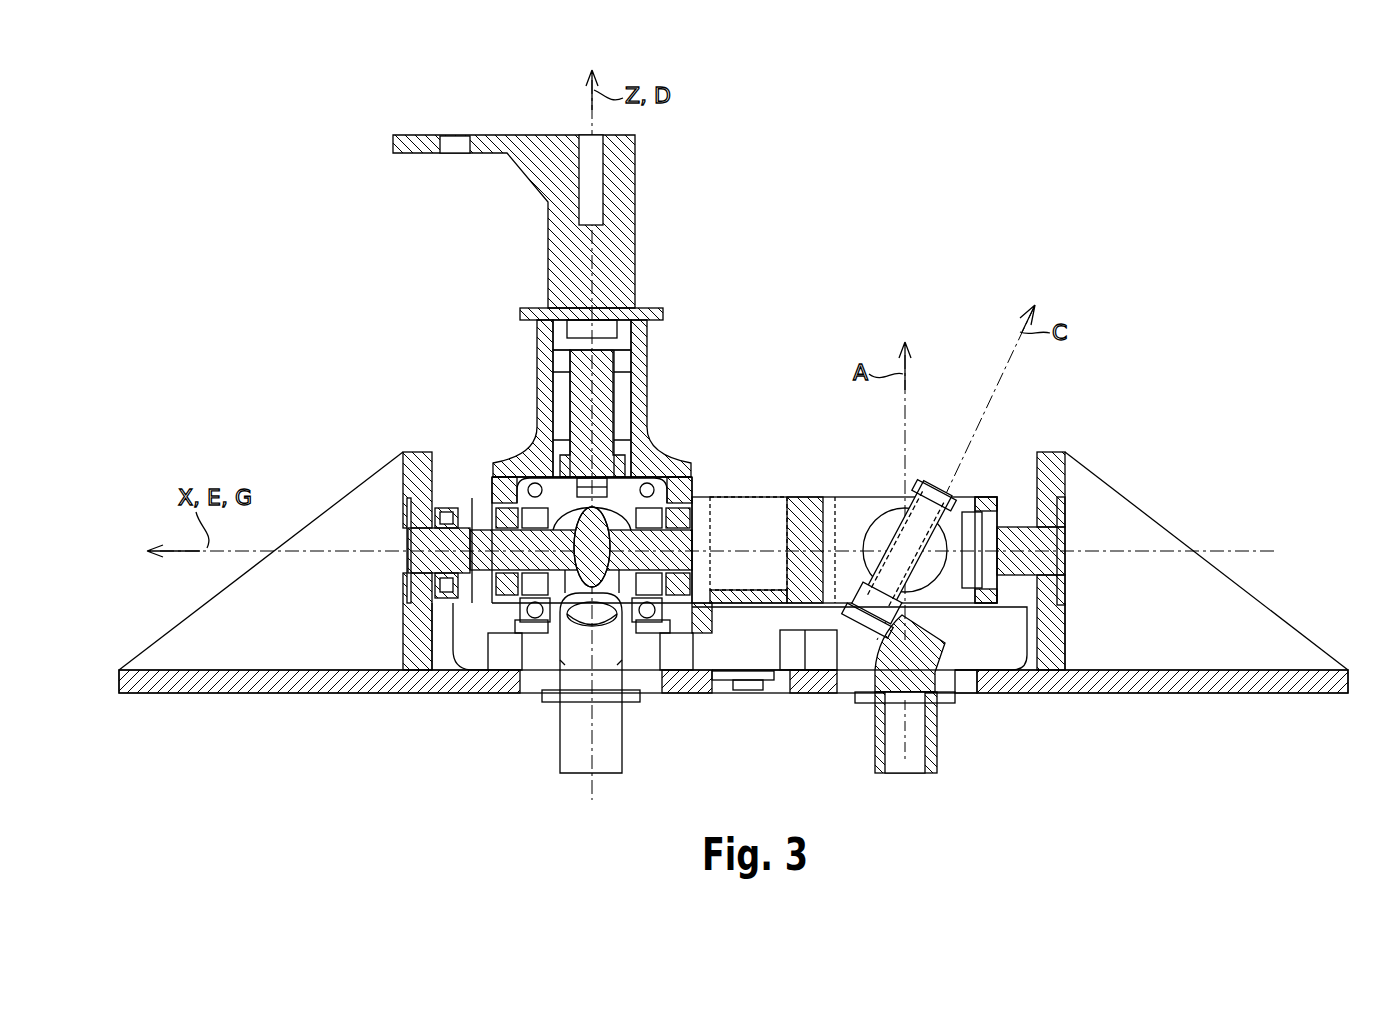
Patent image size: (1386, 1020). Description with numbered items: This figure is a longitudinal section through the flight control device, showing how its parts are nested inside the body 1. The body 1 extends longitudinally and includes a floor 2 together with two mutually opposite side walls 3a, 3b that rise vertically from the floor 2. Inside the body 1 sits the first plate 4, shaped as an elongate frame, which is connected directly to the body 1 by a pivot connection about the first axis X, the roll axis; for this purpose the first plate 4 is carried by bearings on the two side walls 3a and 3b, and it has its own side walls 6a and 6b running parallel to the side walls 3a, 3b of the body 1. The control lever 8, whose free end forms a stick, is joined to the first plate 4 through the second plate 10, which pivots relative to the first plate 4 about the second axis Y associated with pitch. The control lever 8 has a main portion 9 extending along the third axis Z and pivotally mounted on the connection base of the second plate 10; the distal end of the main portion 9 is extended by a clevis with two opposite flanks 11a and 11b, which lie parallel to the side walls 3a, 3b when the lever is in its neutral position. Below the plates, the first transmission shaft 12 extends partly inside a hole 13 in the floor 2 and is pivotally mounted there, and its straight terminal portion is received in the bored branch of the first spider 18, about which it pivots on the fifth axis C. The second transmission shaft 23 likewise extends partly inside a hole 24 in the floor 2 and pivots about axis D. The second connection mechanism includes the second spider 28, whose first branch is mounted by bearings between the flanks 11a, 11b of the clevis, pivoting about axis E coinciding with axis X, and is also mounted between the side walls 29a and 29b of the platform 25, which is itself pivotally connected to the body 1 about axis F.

The body 1 is at (313, 470).
The floor 2 is at (228, 682).
The side wall 3a is at (412, 458).
The side wall 3b is at (1048, 458).
The first plate 4 is at (837, 485).
The side wall 6a is at (437, 607).
The side wall 6b is at (1015, 600).
The control lever 8 is at (603, 288).
The main portion 9 is at (640, 345).
The second plate 10 is at (602, 412).
The flank 11a is at (510, 467).
The flank 11b is at (662, 455).
The first transmission shaft 12 is at (880, 750).
The hole 13 is at (983, 673).
The first spider 18 is at (968, 495).
The second transmission shaft 23 is at (573, 750).
The hole 24 is at (713, 682).
The platform 25 is at (693, 615).
The second spider 28 is at (403, 583).
The side wall 29a is at (450, 507).
The side wall 29b is at (640, 497).